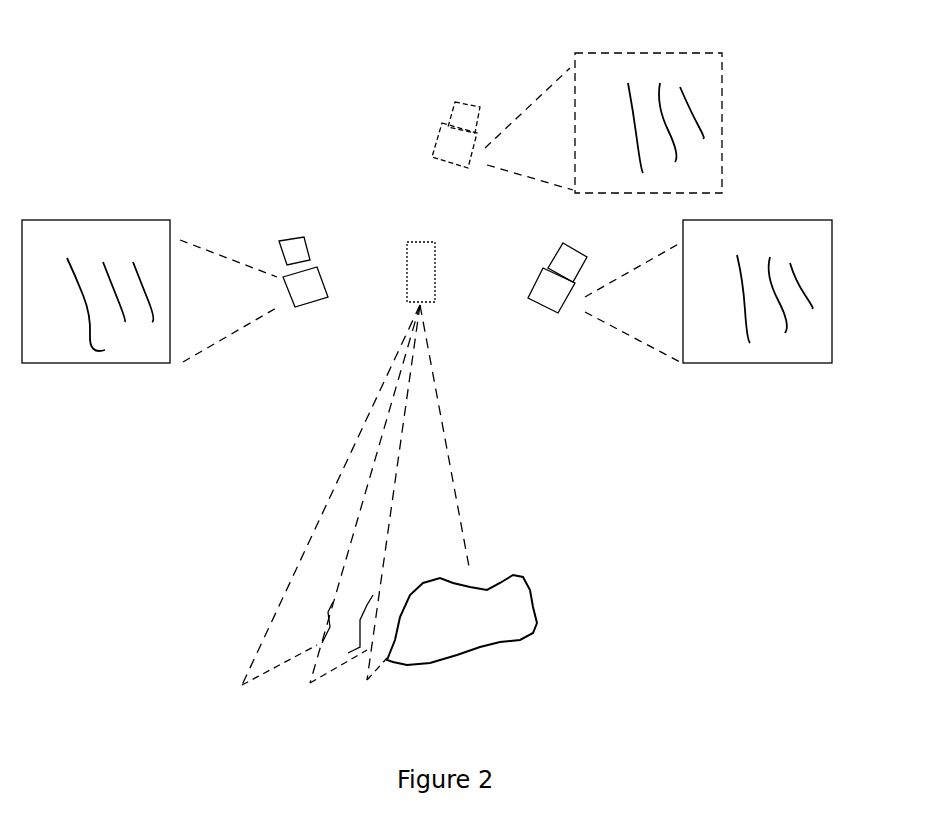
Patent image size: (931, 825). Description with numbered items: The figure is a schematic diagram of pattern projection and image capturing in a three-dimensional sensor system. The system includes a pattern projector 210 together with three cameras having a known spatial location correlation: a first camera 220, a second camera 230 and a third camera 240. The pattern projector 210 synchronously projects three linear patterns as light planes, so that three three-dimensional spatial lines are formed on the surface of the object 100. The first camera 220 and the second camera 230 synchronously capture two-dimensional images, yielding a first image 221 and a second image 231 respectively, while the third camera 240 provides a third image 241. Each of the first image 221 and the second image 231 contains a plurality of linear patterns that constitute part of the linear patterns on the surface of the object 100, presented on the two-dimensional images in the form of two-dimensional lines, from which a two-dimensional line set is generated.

The object 100 is at (537, 612).
The pattern projector 210 is at (415, 240).
The first camera 220 is at (297, 239).
The first image 221 is at (53, 365).
The second camera 230 is at (543, 307).
The second image 231 is at (723, 365).
The third camera 240 is at (457, 102).
The third image 241 is at (722, 140).